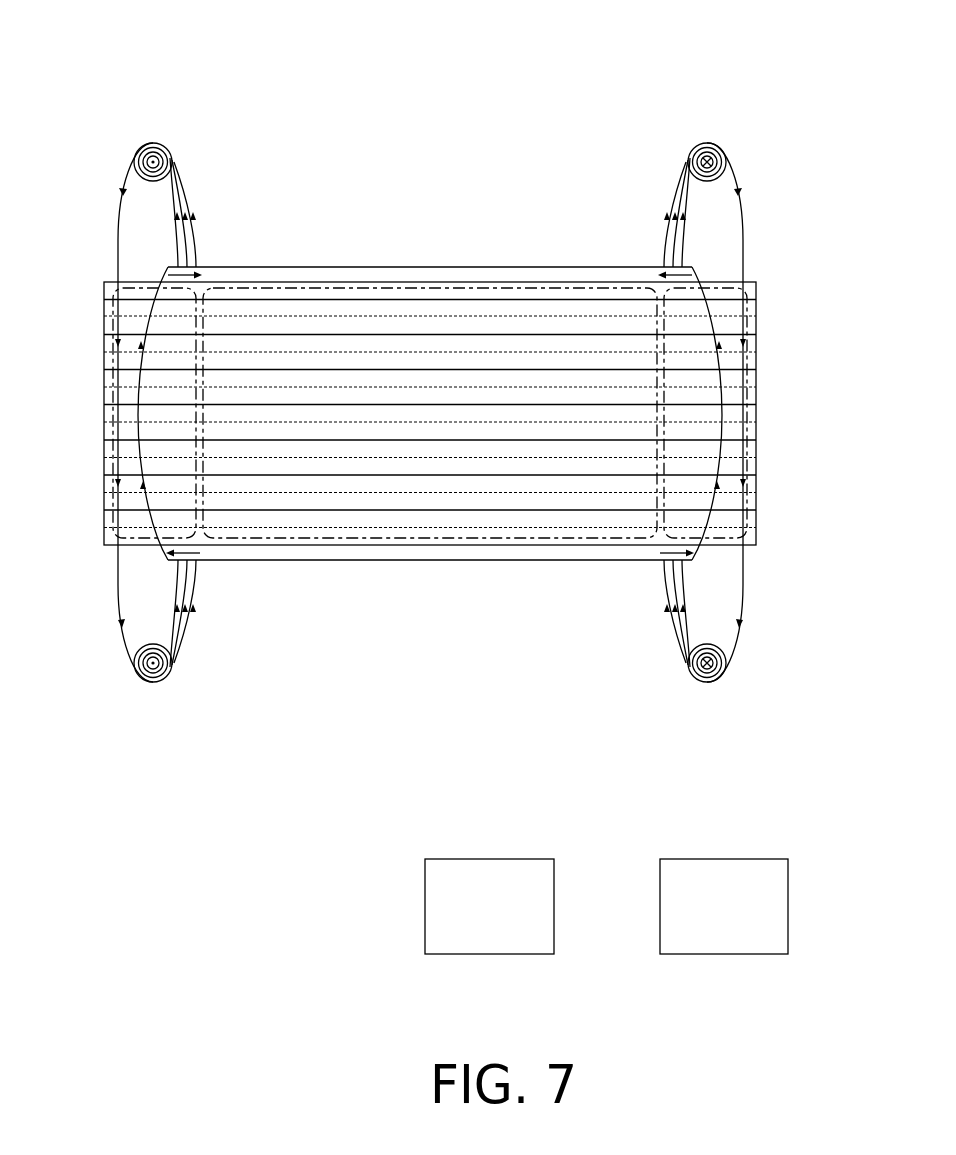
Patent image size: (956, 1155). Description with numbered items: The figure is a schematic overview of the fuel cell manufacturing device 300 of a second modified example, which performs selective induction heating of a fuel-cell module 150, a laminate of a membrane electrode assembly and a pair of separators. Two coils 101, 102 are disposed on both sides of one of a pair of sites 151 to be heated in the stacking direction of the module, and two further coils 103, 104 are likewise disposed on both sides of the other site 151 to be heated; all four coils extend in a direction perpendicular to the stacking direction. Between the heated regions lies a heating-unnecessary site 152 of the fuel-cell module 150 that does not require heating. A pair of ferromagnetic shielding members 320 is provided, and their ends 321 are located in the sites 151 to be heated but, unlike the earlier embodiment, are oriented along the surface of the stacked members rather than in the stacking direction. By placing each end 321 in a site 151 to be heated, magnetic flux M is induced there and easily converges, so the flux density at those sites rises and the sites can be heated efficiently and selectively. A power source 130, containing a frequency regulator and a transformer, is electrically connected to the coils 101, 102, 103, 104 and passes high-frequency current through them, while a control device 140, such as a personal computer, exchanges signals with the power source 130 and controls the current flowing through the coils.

The fuel cell manufacturing device 300 is at (428, 482).
The coil 101 is at (122, 137).
The coil 102 is at (124, 693).
The coil 103 is at (737, 137).
The coil 104 is at (737, 689).
The fuel-cell module 150 is at (389, 411).
The site to be heated 151 is at (434, 413).
The heating-unnecessary site 152 is at (430, 383).
The shielding member 320 is at (430, 419).
The end of shielding member 321 is at (434, 412).
The power source 130 is at (489, 887).
The control device 140 is at (724, 887).
The magnetic flux M is at (432, 412).